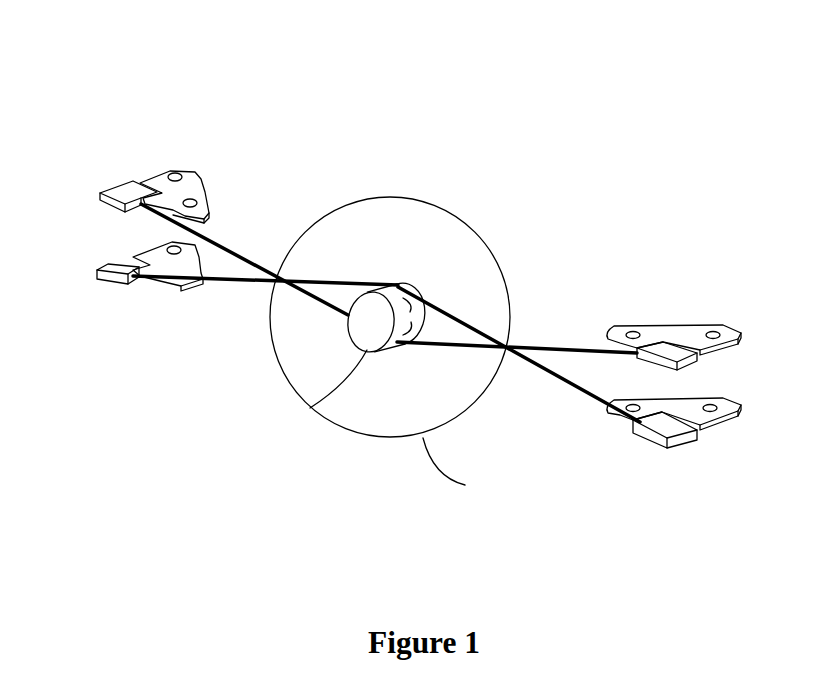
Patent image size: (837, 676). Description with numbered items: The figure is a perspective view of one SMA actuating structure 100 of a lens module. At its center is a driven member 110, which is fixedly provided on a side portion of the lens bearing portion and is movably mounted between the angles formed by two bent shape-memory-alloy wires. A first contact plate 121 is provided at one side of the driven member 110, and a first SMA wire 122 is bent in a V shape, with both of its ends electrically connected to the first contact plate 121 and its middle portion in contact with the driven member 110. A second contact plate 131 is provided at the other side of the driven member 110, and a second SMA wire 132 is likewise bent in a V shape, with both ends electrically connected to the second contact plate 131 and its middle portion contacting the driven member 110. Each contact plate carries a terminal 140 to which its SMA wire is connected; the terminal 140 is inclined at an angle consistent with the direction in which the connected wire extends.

The SMA actuating structure 100 is at (403, 93).
The driven member 110 is at (320, 398).
The first contact plate 121 is at (162, 172).
The first SMA wire 122 is at (313, 298).
The second contact plate 131 is at (178, 293).
The second SMA wire 132 is at (341, 284).
The terminal 140 is at (110, 192).